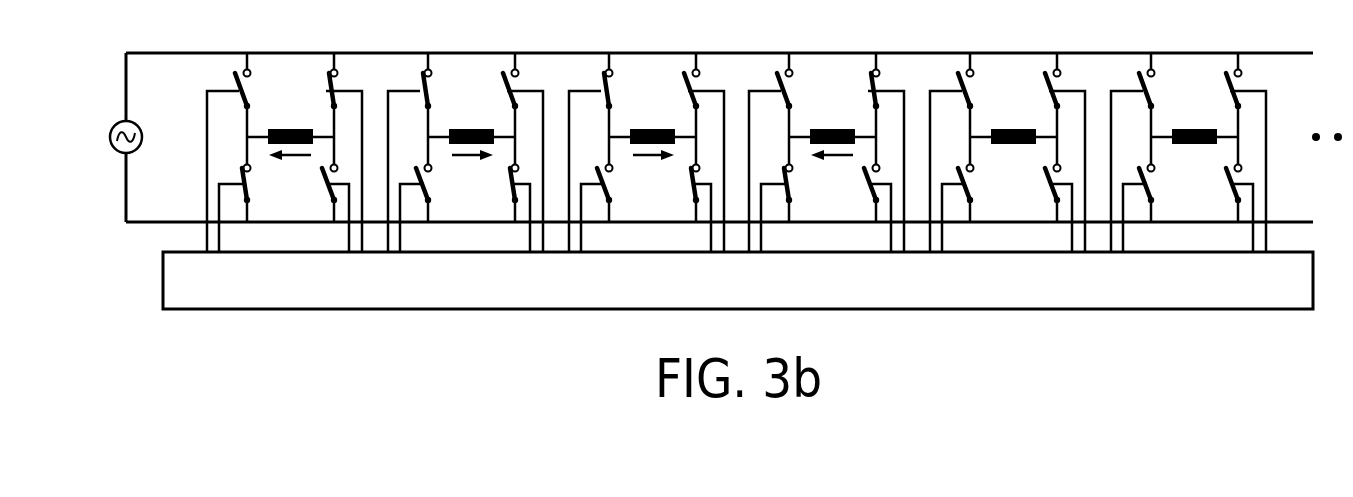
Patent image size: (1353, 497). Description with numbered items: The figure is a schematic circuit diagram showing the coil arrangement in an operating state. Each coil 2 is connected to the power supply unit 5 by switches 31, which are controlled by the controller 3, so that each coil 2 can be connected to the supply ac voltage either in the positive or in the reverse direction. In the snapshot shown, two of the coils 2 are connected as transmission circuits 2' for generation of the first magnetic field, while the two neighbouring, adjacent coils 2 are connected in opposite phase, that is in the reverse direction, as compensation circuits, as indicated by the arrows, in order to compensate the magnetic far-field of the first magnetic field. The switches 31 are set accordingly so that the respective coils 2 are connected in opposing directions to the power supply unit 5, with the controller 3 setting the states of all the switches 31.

The power supply unit 5 is at (117, 124).
The switches 31 is at (233, 75).
The coil 2 is at (742, 109).
The transmission circuits 2' is at (559, 117).
The controller 3 is at (163, 280).